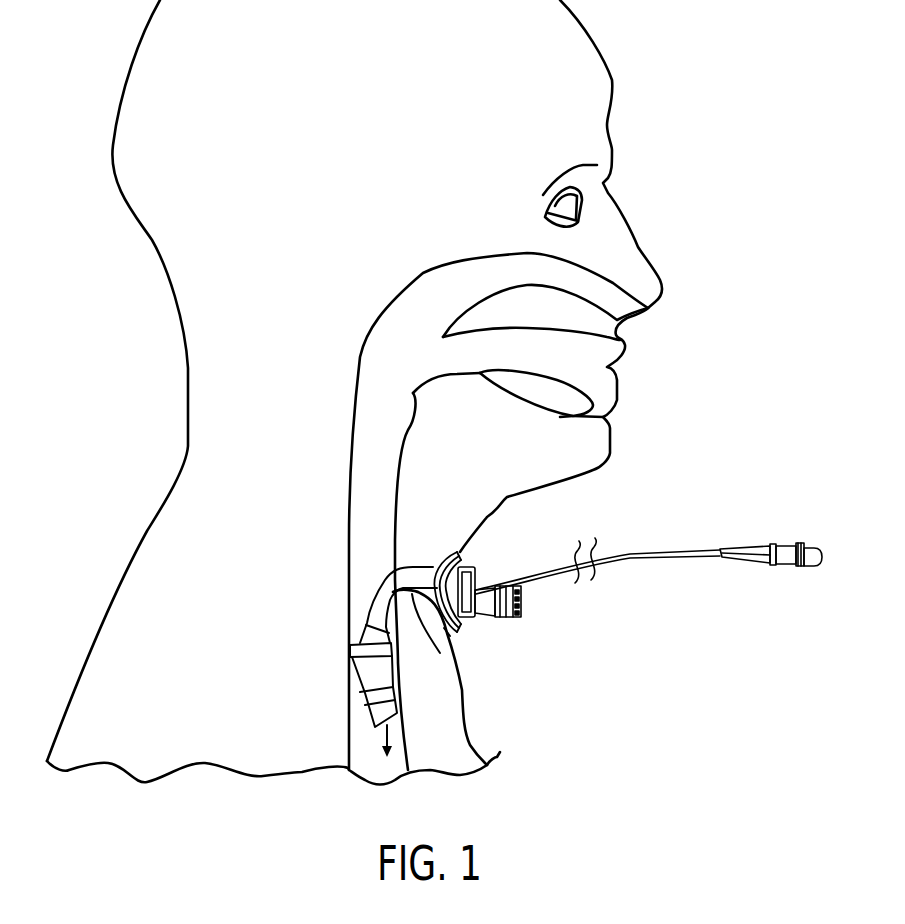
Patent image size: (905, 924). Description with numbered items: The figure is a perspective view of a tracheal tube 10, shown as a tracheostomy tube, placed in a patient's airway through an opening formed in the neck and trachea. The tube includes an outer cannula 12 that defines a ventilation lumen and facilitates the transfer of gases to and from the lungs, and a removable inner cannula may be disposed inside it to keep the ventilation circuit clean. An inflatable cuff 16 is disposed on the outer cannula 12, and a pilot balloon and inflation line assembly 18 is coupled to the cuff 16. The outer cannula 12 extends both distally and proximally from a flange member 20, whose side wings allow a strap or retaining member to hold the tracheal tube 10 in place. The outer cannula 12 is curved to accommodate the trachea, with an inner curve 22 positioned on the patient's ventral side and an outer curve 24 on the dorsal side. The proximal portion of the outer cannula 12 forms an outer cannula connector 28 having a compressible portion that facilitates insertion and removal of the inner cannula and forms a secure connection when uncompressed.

The tracheal tube 10 is at (371, 548).
The outer cannula 12 is at (440, 653).
The inflatable cuff 16 is at (382, 677).
The pilot balloon and inflation line assembly 18 is at (788, 565).
The flange member 20 is at (447, 628).
The inner curve 22 is at (447, 633).
The outer curve 24 is at (364, 574).
The outer cannula connector 28 is at (489, 618).